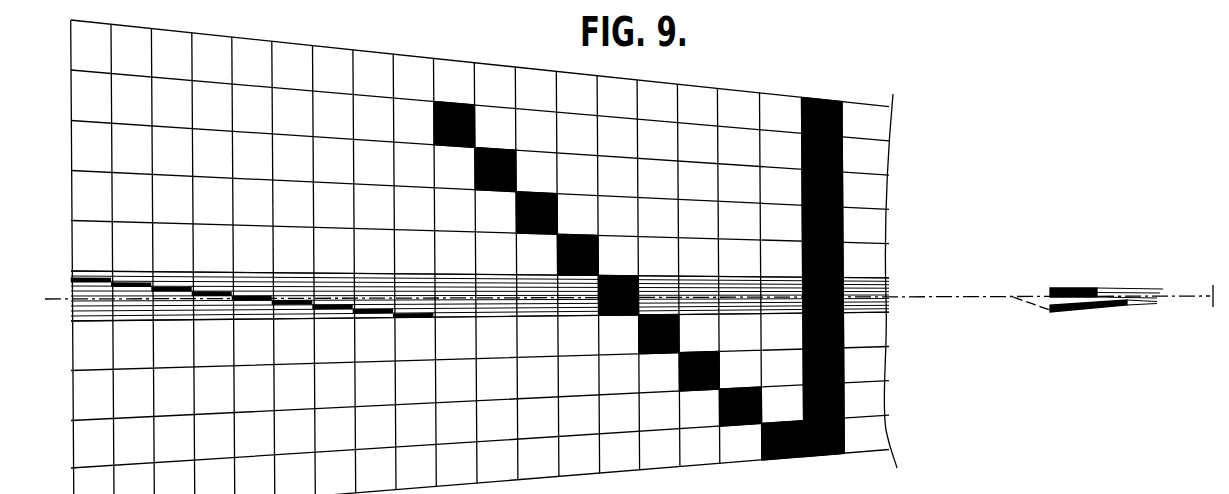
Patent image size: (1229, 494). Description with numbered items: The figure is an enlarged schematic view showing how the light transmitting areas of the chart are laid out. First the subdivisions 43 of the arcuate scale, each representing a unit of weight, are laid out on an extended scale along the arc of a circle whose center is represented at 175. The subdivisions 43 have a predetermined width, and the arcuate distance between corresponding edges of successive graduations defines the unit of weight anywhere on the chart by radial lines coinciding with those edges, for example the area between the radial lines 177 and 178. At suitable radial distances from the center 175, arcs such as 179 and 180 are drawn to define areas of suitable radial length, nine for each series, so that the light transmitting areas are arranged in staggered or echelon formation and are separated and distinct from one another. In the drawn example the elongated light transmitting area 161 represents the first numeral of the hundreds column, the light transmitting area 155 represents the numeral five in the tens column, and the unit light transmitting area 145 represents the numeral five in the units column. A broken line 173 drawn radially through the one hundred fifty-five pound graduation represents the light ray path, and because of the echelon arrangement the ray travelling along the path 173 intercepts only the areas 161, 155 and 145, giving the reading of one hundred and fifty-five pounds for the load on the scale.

The light transmitting area 145 is at (255, 300).
The broken line 173 is at (497, 299).
The light transmitting area 155 is at (613, 310).
The elongated light transmitting area 161 is at (833, 102).
The arc 179 is at (232, 397).
The arc 180 is at (270, 388).
The radial line 177 is at (983, 295).
The radial line 178 is at (985, 299).
The subdivisions 43 is at (1076, 287).
The center 175 is at (1208, 303).